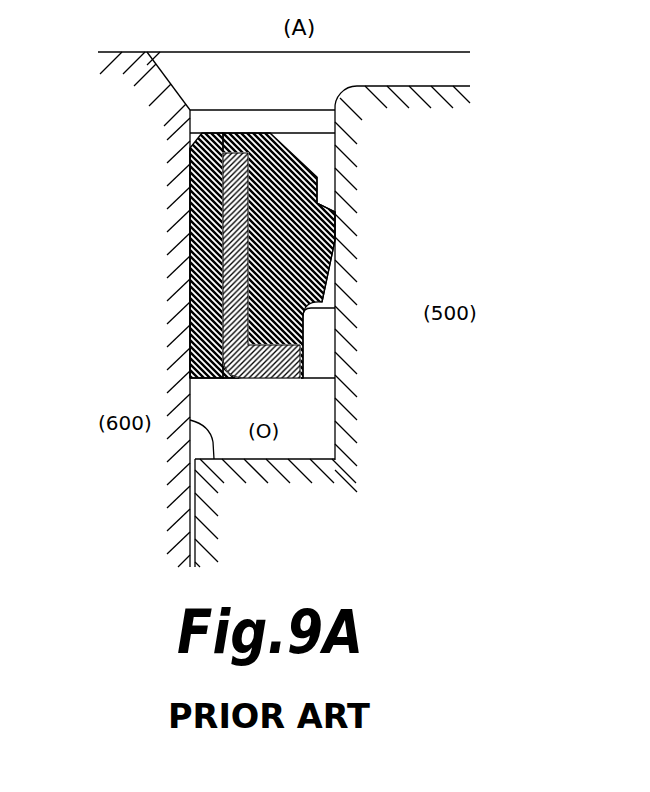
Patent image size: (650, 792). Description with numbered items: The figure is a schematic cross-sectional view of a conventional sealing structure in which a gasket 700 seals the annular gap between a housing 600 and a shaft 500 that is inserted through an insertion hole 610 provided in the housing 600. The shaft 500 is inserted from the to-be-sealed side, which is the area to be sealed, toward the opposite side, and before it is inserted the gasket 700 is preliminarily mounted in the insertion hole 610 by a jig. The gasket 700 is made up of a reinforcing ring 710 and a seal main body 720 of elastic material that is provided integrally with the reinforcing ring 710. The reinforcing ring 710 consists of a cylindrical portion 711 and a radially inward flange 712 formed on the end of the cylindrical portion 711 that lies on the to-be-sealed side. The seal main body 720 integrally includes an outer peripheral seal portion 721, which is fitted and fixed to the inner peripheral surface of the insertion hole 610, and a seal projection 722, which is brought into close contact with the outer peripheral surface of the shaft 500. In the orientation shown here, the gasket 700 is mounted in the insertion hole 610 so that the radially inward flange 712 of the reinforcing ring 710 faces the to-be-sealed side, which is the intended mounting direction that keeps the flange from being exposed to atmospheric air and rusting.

The shaft 500 is at (402, 276).
The housing 600 is at (284, 309).
The insertion hole 610 is at (197, 463).
The gasket 700 is at (286, 311).
The reinforcing ring 710 is at (205, 242).
The cylindrical portion 711 is at (250, 264).
The radially inward flange 712 is at (305, 360).
The seal main body 720 is at (297, 154).
The outer peripheral seal portion 721 is at (192, 283).
The seal projection 722 is at (328, 225).